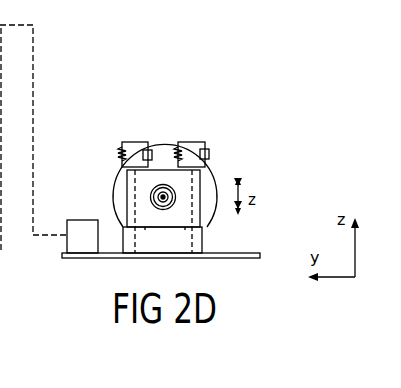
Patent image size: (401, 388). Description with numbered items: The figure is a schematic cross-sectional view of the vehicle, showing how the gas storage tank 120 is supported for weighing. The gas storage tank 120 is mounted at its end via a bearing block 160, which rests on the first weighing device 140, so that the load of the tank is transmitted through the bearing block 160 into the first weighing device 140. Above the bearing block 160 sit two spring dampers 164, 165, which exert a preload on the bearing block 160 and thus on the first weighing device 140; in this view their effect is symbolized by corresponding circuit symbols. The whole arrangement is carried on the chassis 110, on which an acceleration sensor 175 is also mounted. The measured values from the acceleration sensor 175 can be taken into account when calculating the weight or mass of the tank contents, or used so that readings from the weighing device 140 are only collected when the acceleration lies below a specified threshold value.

The chassis 110 is at (78, 254).
The gas storage tank 120 is at (167, 153).
The first weighing device 140 is at (198, 242).
The bearing block 160 is at (122, 195).
The first spring damper 164 is at (193, 138).
The first spring damper 165 is at (132, 140).
The acceleration sensor 175 is at (82, 235).